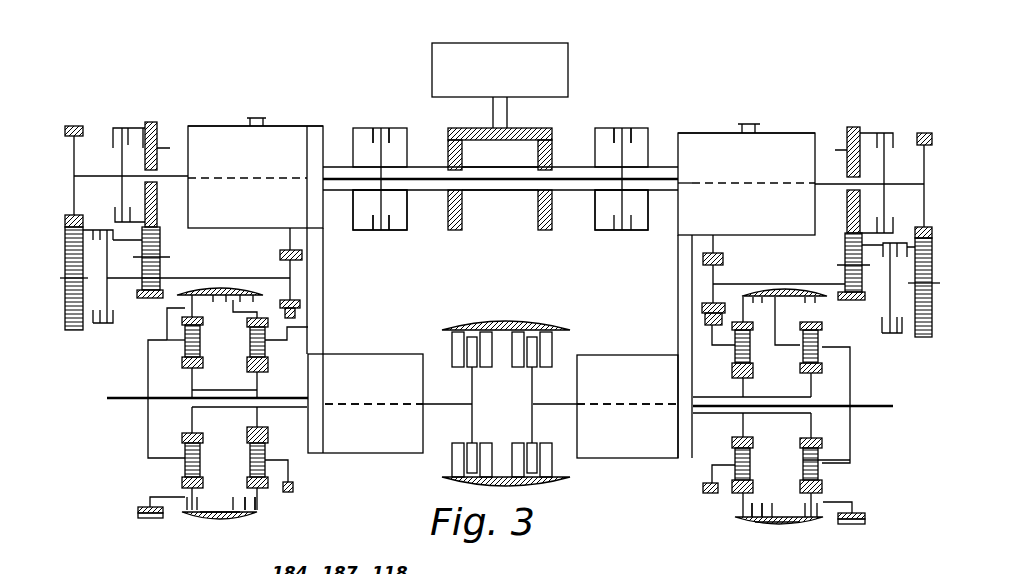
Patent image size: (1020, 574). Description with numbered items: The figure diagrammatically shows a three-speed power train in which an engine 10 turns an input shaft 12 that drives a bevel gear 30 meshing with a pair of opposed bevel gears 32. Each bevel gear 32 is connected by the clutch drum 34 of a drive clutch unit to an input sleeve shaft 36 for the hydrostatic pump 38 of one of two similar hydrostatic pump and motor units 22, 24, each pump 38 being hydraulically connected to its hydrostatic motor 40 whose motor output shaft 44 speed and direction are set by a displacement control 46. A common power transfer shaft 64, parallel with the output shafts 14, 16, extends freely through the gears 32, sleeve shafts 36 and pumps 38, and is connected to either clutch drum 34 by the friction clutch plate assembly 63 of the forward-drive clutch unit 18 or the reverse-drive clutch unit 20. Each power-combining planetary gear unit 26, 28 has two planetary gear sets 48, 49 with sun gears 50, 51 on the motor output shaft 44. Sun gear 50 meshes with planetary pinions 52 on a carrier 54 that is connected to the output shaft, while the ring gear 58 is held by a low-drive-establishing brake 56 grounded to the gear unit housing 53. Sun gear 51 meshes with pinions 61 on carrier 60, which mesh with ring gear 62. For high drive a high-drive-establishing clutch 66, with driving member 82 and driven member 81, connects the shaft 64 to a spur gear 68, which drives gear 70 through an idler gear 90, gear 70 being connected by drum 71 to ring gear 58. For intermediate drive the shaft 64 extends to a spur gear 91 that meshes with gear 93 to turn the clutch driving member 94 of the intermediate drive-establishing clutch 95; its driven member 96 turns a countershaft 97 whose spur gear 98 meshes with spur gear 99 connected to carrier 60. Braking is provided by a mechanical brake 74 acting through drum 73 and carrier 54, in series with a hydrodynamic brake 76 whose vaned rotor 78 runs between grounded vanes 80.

The engine 10 is at (568, 60).
The input shaft 12 is at (507, 108).
The output shaft 14 is at (893, 406).
The output shaft 16 is at (118, 398).
The forward-drive clutch unit 18 is at (383, 127).
The reverse-drive clutch unit 20 is at (632, 234).
The hydrostatic pump and motor unit 22 is at (798, 132).
The hydrostatic pump and motor unit 24 is at (285, 125).
The power-combining planetary gear unit 26 is at (748, 529).
The power-combining planetary gear unit 28 is at (182, 509).
The bevel gear 30 is at (470, 140).
The bevel gear 32 is at (542, 208).
The clutch drum 34 is at (402, 232).
The input sleeve shaft 36 is at (680, 203).
The hydrostatic pump 38 is at (232, 126).
The hydrostatic motor 40 is at (400, 455).
The motor output shaft 44 is at (690, 417).
The control 46 is at (256, 118).
The planetary gear set 48 is at (179, 381).
The planetary gear set 49 is at (240, 441).
The sun gear 50 is at (198, 364).
The sun gear 51 is at (247, 435).
The planetary pinion 52 is at (200, 335).
The gear unit housing 53 is at (512, 316).
The carrier 54 is at (148, 345).
The low-drive-establishing brake 56 is at (180, 290).
The ring gear 58 is at (182, 482).
The carrier 60 is at (308, 327).
The pinion 61 is at (265, 348).
The ring gear 62 is at (265, 470).
The friction clutch plate assembly 63 is at (370, 230).
The power transfer shaft 64 is at (493, 190).
The high-drive-establishing clutch 66 is at (150, 121).
The spur gear 68 is at (157, 148).
The spur gear 70 is at (138, 513).
The drum 71 is at (185, 340).
The drum 73 is at (226, 512).
The mechanical brake 74 is at (257, 508).
The hydrodynamic brake 76 is at (451, 456).
The vaned rotor 78 is at (560, 332).
The grounded vanes 80 is at (470, 340).
The high-clutch driven member 81 is at (115, 130).
The high-clutch driving member 82 is at (122, 162).
The idler gear 90 is at (160, 230).
The spur gear 91 is at (70, 126).
The gear 93 is at (74, 330).
The clutch driving member 94 is at (160, 240).
The intermediate drive-establishing clutch 95 is at (100, 227).
The intermediate-clutch driven member 96 is at (110, 310).
The countershaft 97 is at (270, 300).
The spur gear 98 is at (290, 250).
The spur gear 99 is at (293, 490).